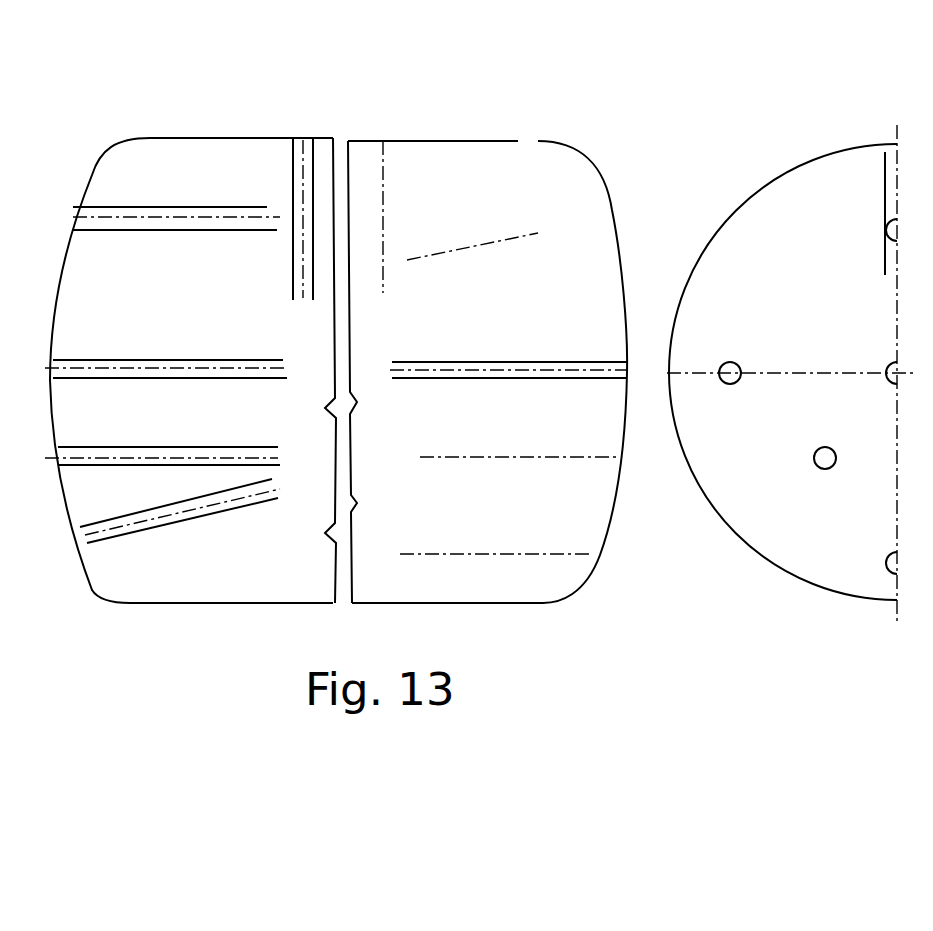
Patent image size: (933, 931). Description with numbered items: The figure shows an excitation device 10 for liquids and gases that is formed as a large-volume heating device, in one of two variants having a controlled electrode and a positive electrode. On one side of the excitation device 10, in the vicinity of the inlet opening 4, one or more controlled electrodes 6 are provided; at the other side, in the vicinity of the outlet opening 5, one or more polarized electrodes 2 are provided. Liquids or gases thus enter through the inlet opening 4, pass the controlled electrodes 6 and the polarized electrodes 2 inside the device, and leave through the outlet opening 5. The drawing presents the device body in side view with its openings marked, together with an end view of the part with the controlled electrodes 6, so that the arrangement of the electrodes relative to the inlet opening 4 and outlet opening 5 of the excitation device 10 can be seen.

The polarized electrodes 2 is at (532, 554).
The inlet opening 4 is at (158, 137).
The outlet opening 5 is at (528, 140).
The controlled electrodes 6 is at (270, 478).
The excitation device 10 is at (458, 142).